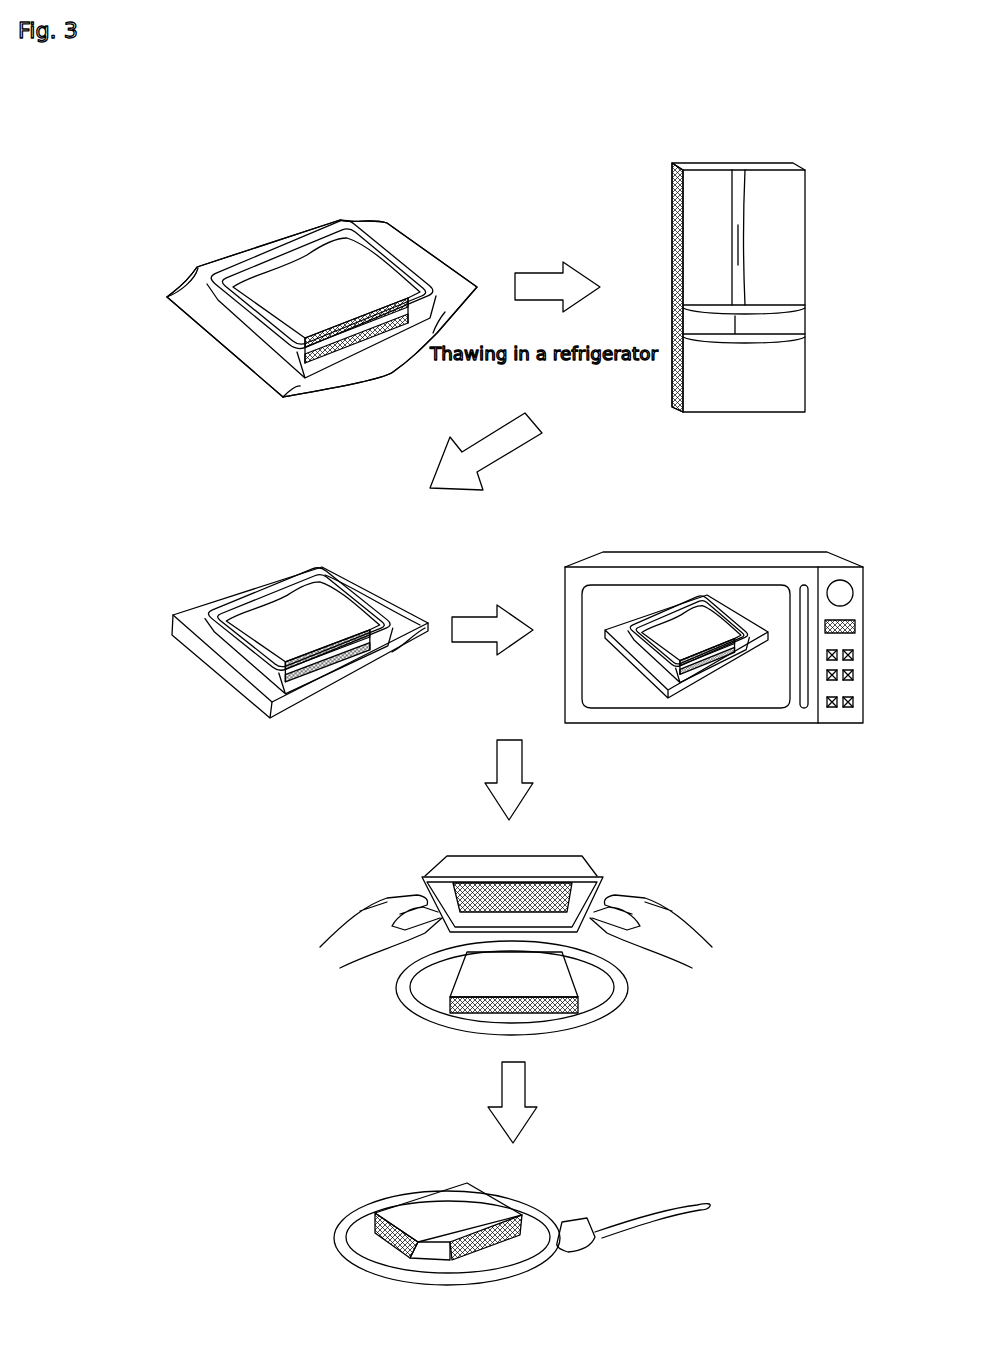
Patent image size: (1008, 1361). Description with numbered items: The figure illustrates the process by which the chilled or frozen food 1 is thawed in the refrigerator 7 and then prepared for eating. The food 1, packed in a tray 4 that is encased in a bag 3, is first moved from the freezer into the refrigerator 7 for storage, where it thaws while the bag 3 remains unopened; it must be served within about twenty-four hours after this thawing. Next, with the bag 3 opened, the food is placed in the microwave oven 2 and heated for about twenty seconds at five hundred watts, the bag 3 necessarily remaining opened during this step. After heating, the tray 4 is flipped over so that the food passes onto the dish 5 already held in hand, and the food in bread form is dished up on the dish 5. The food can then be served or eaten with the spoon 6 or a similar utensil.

The chilled or frozen food 1 is at (328, 217).
The microwave oven 2 is at (818, 560).
The bag 3 is at (210, 297).
The tray 4 is at (420, 276).
The dish 5 is at (612, 1003).
The spoon 6 is at (687, 1210).
The refrigerator 7 is at (787, 212).